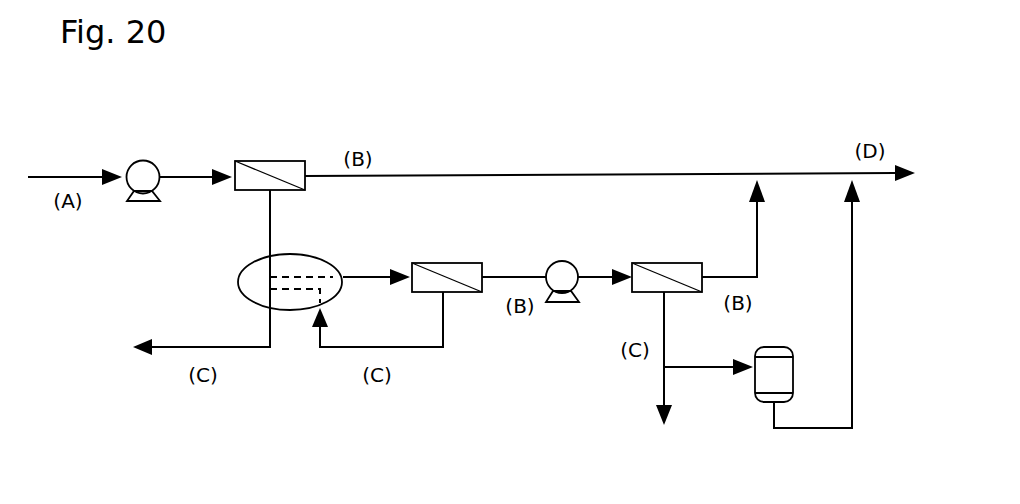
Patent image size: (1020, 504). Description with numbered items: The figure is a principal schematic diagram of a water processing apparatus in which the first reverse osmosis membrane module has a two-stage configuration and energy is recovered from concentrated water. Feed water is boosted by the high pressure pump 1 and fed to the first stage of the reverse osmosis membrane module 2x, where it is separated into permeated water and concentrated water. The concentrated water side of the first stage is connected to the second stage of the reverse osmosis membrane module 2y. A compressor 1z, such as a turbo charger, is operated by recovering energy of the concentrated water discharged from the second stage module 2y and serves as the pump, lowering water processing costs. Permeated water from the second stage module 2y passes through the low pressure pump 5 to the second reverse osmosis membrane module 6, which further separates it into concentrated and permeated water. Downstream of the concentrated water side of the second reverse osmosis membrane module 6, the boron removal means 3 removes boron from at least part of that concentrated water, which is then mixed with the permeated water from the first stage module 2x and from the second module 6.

The high pressure pump 1 is at (151, 161).
The first stage of the reverse osmosis membrane module 2x is at (262, 160).
The second stage of the reverse osmosis membrane module 2y is at (441, 262).
The compressor 1z is at (238, 283).
The low pressure pump 5 is at (563, 261).
The second reverse osmosis membrane module 6 is at (655, 262).
The boron removal means 3 is at (757, 405).